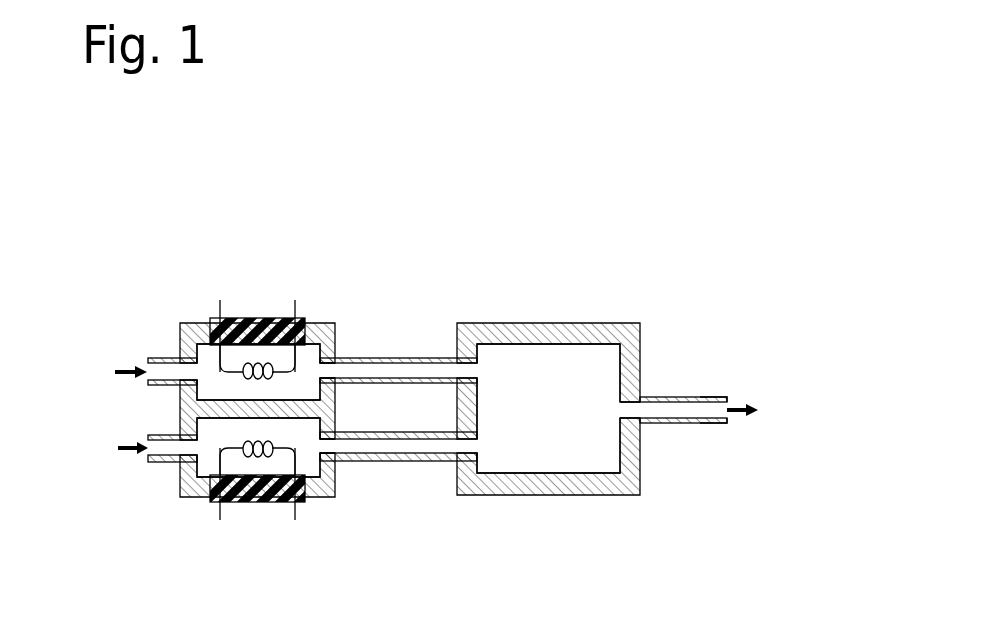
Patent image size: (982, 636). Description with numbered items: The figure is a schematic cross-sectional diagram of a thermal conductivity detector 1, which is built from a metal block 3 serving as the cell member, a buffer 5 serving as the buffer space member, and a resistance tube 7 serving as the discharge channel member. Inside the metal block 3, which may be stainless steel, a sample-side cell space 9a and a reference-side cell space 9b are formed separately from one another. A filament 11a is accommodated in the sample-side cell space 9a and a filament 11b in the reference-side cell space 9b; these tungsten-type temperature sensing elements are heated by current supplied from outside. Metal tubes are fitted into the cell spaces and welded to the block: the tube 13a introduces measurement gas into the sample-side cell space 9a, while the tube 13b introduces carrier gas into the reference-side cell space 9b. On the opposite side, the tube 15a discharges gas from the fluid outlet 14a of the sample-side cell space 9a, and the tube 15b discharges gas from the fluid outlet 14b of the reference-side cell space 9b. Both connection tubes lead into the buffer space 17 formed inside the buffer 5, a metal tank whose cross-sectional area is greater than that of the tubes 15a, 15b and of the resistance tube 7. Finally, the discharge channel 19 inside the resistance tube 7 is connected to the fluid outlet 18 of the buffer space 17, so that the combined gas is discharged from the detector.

The thermal conductivity detector 1 is at (365, 265).
The metal block 3 is at (319, 322).
The buffer 5 is at (563, 323).
The resistance tube 7 is at (704, 397).
The sample-side cell space 9a is at (205, 353).
The reference-side cell space 9b is at (205, 463).
The filament 11a is at (255, 368).
The filament 11b is at (257, 453).
The tube 13a is at (166, 357).
The tube 13b is at (162, 463).
The fluid outlet 14a is at (318, 378).
The fluid outlet 14b is at (324, 443).
The tube 15a is at (413, 357).
The tube 15b is at (408, 460).
The buffer space 17 is at (530, 375).
The fluid outlet 18 is at (622, 410).
The discharge channel 19 is at (675, 397).